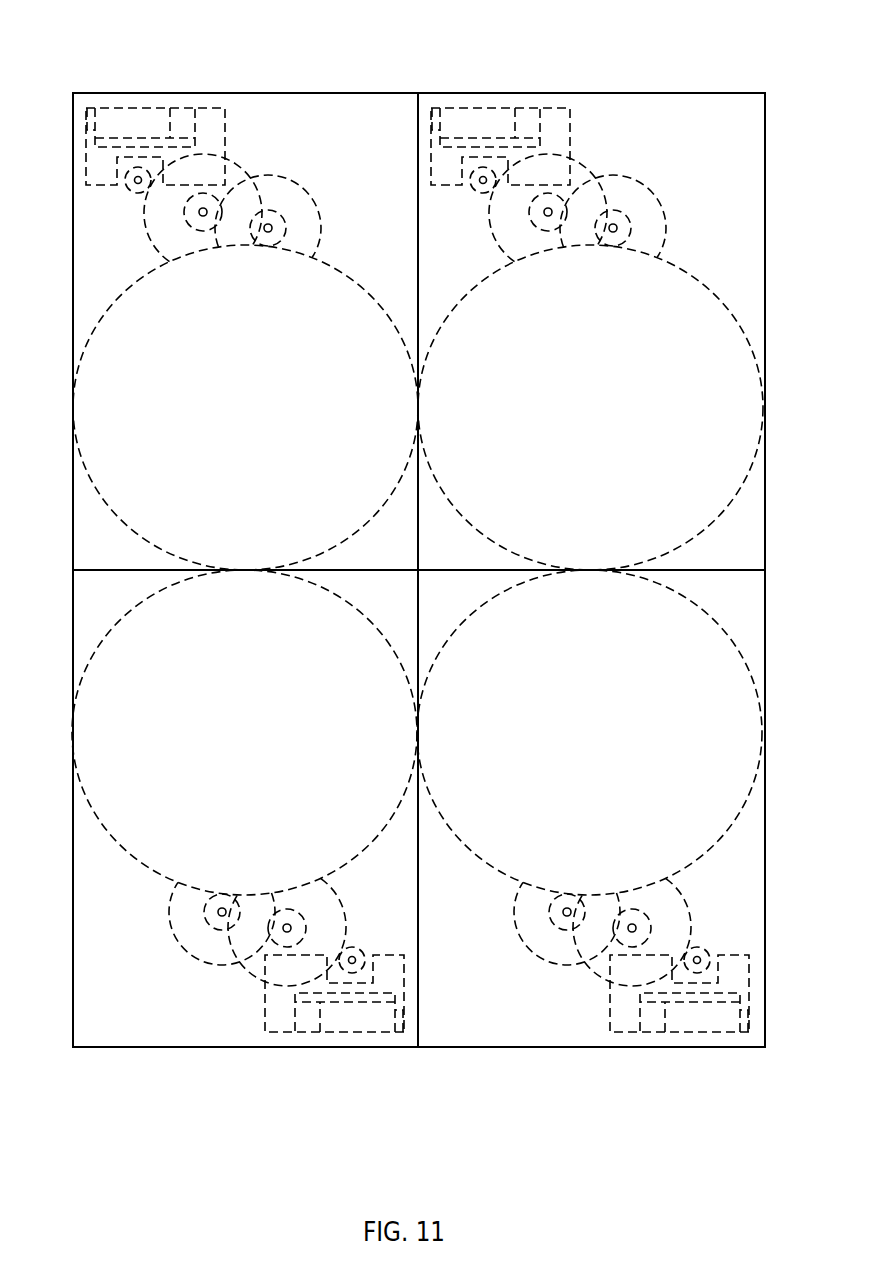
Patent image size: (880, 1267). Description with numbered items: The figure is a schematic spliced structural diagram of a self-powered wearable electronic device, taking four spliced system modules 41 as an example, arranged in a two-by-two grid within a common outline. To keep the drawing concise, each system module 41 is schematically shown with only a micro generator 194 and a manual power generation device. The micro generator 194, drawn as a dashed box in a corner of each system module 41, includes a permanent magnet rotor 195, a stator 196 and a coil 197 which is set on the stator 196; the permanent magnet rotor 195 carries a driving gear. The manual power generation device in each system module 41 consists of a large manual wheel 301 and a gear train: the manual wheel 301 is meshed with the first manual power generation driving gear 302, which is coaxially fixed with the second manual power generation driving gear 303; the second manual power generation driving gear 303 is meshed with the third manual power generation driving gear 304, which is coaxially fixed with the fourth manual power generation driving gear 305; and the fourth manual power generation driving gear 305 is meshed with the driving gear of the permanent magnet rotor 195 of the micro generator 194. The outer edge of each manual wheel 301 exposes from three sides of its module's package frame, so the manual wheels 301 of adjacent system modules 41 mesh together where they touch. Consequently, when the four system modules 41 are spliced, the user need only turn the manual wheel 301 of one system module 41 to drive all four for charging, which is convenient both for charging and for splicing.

The system module 41 is at (73, 481).
The micro generator 194 is at (195, 56).
The permanent magnet rotor 195 is at (130, 177).
The stator 196 is at (90, 128).
The coil 197 is at (107, 132).
The manual wheel 301 is at (360, 303).
The first manual power generation driving gear 302 is at (282, 222).
The second manual power generation driving gear 303 is at (279, 183).
The third manual power generation driving gear 304 is at (228, 166).
The fourth manual power generation driving gear 305 is at (212, 200).